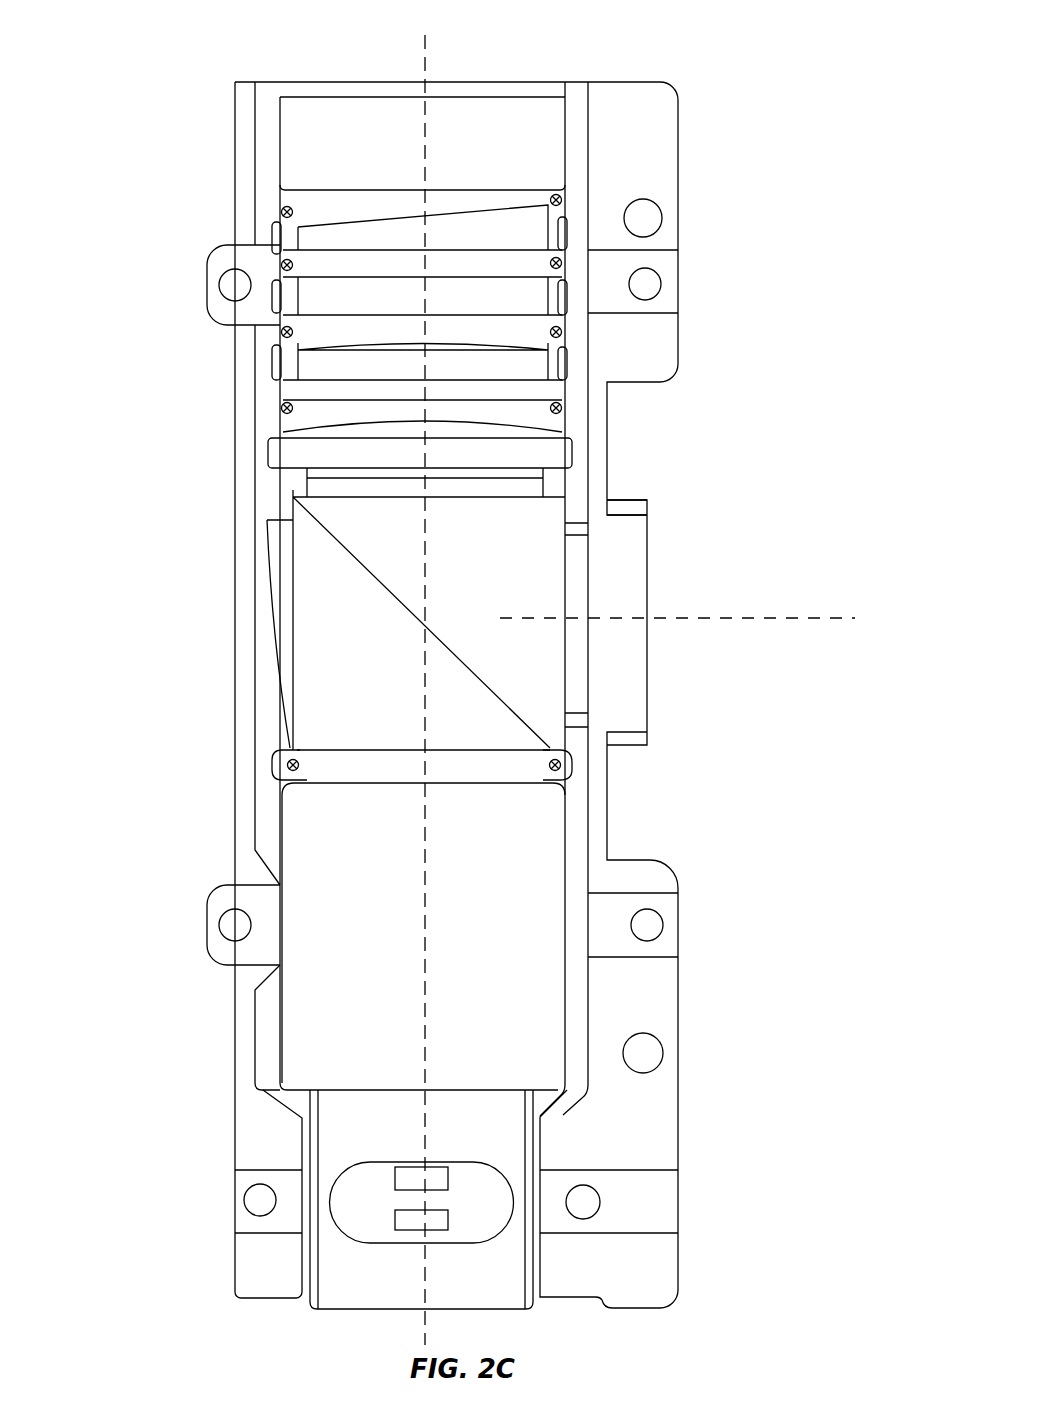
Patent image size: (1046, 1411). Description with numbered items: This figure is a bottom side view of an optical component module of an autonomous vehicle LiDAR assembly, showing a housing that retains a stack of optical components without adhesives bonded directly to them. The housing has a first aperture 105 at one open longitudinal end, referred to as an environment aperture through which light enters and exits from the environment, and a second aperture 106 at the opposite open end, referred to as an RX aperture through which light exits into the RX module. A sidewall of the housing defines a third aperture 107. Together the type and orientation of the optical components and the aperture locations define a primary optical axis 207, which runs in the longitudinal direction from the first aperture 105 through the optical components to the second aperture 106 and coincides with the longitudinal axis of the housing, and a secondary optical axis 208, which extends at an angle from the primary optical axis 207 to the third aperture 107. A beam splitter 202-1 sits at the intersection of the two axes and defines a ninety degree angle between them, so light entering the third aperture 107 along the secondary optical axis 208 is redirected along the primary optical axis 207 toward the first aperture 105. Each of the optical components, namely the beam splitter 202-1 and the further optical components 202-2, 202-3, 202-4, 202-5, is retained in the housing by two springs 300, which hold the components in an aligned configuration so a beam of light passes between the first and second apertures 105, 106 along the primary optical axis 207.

The second aperture 106 is at (341, 56).
The first aperture 105 is at (533, 1320).
The third aperture 107 is at (668, 553).
The primary optical axis 207 is at (430, 62).
The secondary optical axis 208 is at (773, 618).
The beam splitter 202-1 is at (416, 786).
The optical component 202-2 is at (420, 448).
The optical component 202-3 is at (422, 361).
The optical component 202-4 is at (422, 296).
The optical component 202-5 is at (422, 228).
The spring 300 is at (567, 200).